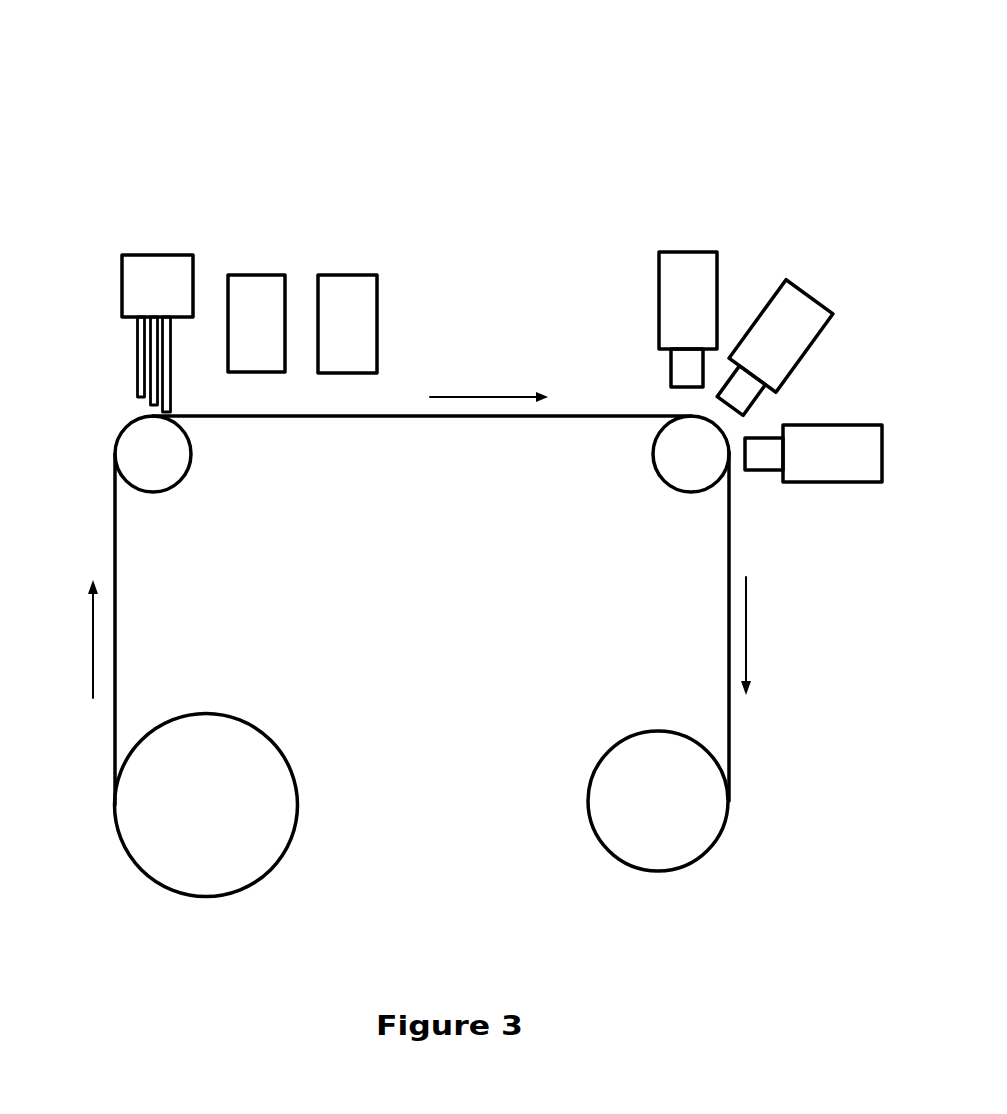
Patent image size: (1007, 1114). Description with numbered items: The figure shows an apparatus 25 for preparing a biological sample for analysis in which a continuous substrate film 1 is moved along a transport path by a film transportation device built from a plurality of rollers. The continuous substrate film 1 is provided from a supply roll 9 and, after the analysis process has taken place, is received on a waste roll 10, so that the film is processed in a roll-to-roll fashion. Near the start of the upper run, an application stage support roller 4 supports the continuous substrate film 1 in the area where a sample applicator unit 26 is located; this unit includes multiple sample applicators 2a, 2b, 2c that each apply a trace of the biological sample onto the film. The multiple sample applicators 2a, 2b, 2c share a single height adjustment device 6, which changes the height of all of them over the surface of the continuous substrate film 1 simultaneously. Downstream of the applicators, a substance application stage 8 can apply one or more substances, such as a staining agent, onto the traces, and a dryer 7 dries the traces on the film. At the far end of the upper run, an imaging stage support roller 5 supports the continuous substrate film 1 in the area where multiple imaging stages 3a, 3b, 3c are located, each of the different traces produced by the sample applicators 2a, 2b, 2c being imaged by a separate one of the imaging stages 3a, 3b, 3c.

The continuous substrate film 1 is at (366, 443).
The sample applicator 2a is at (130, 372).
The sample applicator 2b is at (142, 405).
The sample applicator 2c is at (178, 379).
The imaging stage 3a is at (688, 275).
The imaging stage 3b is at (782, 335).
The imaging stage 3c is at (828, 440).
The application stage support roller 4 is at (152, 452).
The imaging stage support roller 5 is at (689, 460).
The height adjustment device 6 is at (178, 278).
The dryer 7 is at (352, 312).
The substance application stage 8 is at (257, 318).
The supply roll 9 is at (206, 808).
The waste roll 10 is at (654, 808).
The apparatus 25 is at (148, 209).
The sample applicator unit 26 is at (148, 264).